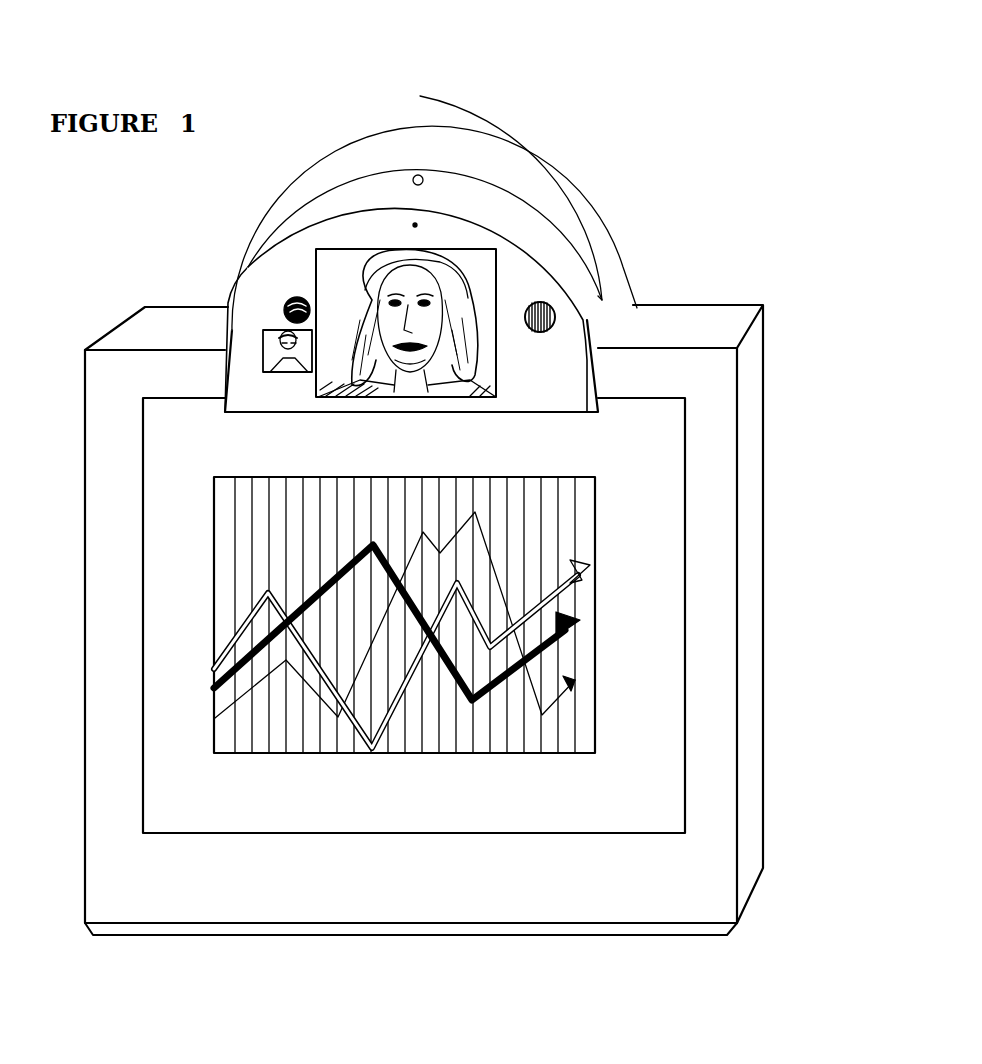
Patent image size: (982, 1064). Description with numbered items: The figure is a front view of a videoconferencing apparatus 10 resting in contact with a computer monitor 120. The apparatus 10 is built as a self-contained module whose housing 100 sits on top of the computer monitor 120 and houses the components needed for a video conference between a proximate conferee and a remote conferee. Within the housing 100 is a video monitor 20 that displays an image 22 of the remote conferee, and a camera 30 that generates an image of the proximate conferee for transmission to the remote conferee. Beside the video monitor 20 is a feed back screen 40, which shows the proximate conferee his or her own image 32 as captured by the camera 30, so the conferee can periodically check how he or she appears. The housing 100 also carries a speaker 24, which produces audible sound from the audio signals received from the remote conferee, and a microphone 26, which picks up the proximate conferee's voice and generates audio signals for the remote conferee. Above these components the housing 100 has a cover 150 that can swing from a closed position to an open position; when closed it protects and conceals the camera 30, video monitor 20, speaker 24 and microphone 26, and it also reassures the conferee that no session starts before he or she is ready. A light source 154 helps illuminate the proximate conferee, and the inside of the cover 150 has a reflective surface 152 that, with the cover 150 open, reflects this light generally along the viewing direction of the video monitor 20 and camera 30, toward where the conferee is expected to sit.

The videoconferencing apparatus 10 is at (742, 78).
The video monitor 20 is at (603, 283).
The image 22 is at (495, 305).
The speaker 24 is at (548, 318).
The microphone 26 is at (468, 290).
The camera 30 is at (283, 293).
The image 32 is at (278, 347).
The feed back screen 40 is at (260, 343).
The housing 100 is at (645, 298).
The computer monitor 120 is at (645, 625).
The cover 150 is at (550, 132).
The reflective surface 152 is at (500, 145).
The light source 154 is at (417, 160).